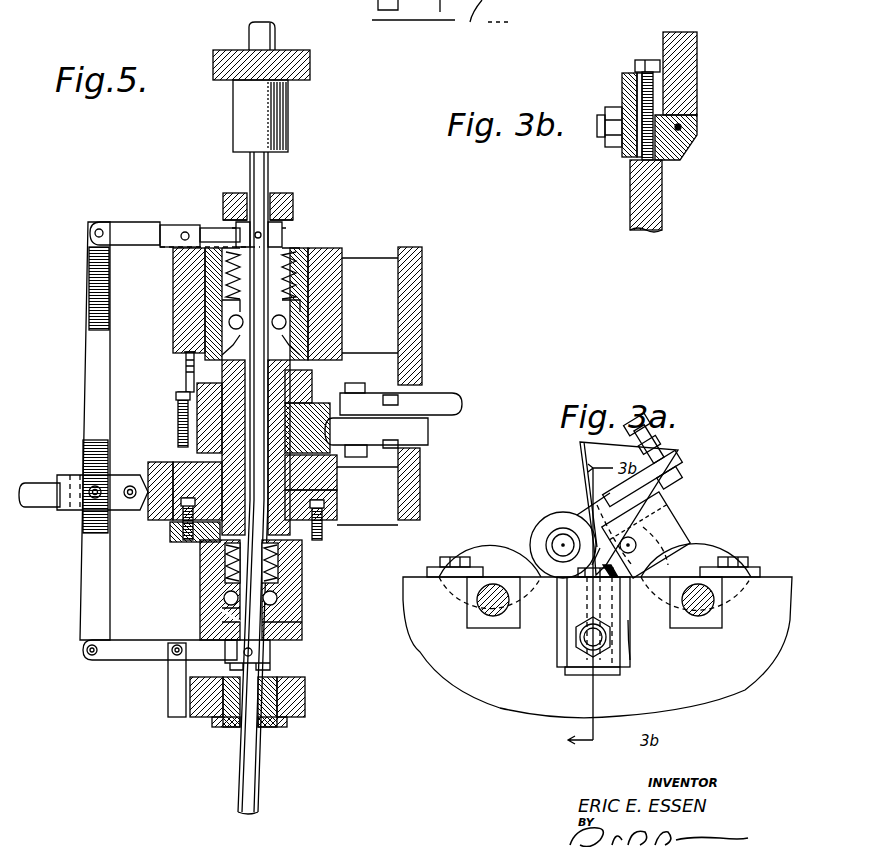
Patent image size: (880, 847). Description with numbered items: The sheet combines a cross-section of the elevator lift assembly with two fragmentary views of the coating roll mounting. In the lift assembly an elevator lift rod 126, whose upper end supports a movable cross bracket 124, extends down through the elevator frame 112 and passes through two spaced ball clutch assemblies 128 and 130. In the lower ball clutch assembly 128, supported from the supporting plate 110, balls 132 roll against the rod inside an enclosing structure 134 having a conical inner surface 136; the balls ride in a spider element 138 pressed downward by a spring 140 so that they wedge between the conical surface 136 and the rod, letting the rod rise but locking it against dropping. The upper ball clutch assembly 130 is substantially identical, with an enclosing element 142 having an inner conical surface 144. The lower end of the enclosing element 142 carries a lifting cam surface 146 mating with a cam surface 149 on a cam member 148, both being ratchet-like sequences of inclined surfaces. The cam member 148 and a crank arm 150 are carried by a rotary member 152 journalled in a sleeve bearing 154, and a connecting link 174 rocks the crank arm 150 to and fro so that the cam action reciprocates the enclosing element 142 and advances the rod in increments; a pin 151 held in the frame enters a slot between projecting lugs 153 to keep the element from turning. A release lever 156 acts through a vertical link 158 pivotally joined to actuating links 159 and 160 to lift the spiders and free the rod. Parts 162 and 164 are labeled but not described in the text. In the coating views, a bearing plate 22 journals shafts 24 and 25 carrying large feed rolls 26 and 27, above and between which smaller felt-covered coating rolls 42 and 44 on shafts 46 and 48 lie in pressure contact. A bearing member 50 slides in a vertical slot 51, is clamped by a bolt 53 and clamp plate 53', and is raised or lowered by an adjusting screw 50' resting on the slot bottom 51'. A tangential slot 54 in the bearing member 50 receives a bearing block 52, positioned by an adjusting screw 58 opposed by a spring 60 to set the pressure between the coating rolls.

In FIG. 5, the cross bracket 124 is at (288, 118).
In FIG. 5, the elevator lift rod 126 is at (272, 172).
In FIG. 5, the upper bearing blocks 162 is at (278, 194).
In FIG. 5, the ball clutch assembly 130 is at (286, 240).
In FIG. 5, the actuating link 159 is at (140, 228).
In FIG. 5, the vertical link 158 is at (90, 372).
In FIG. 5, the release lever 156 is at (42, 483).
In FIG. 5, the enclosing element 142 is at (343, 266).
In FIG. 5, the inner conical surface 144 is at (300, 318).
In FIG. 5, the elevator frame 112 is at (345, 266).
In FIG. 5, the pin 151 is at (182, 358).
In FIG. 5, the projecting lugs 153 is at (180, 382).
In FIG. 5, the lifting cam surface 146 is at (200, 397).
In FIG. 5, the cam member 148 is at (340, 396).
In FIG. 5, the cam surface 149 is at (312, 402).
In FIG. 5, the connecting link 174 is at (446, 393).
In FIG. 5, the crank arm 150 is at (430, 433).
In FIG. 3A, the crank arm 150 is at (450, 432).
In FIG. 5, the spring 140 is at (205, 574).
In FIG. 5, the conical inner surface 136 is at (220, 596).
In FIG. 5, the spider element 138 is at (228, 615).
In FIG. 5, the rotary member 152 is at (338, 482).
In FIG. 5, the sleeve bearing 154 is at (338, 504).
In FIG. 5, the supporting plate 110 is at (422, 522).
In FIG. 3A, the supporting plate 110 is at (424, 518).
In FIG. 5, the ball clutch assembly 128 is at (302, 606).
In FIG. 5, the balls 132 is at (278, 598).
In FIG. 5, the enclosing structure 134 is at (302, 626).
In FIG. 5, the actuating link 160 is at (132, 660).
In FIG. 5, the bottom bearing 164 is at (264, 730).
In FIG. 3B, the bearing member 50 is at (693, 96).
In FIG. 3A, the bearing member 50 is at (611, 508).
In FIG. 3B, the adjusting screw 50' is at (646, 97).
In FIG. 3A, the adjusting screw 50' is at (590, 567).
In FIG. 3A, the vertical slot 51 is at (640, 652).
In FIG. 3B, the bottom of vertical slot 51' is at (655, 193).
In FIG. 3B, the bolt 53 is at (601, 134).
In FIG. 3A, the bolt 53 is at (585, 655).
In FIG. 3B, the clamp plate 53' is at (615, 115).
In FIG. 3A, the clamp plate 53' is at (629, 639).
In FIG. 3A, the bearing plate 22 is at (430, 577).
In FIG. 3A, the shaft 24 is at (480, 614).
In FIG. 3A, the shaft 25 is at (680, 616).
In FIG. 3A, the feed roll 26 is at (507, 546).
In FIG. 3A, the feed roll 27 is at (735, 556).
In FIG. 3A, the spring 60 is at (630, 648).
In FIG. 3A, the coating roll 42 is at (540, 515).
In FIG. 3A, the shaft 46 is at (548, 535).
In FIG. 3A, the coating roll 44 is at (690, 522).
In FIG. 3A, the slot 54 is at (575, 512).
In FIG. 3A, the adjusting screw 58 is at (690, 502).
In FIG. 3A, the shaft 48 is at (640, 547).
In FIG. 3A, the bearing block 52 is at (680, 560).